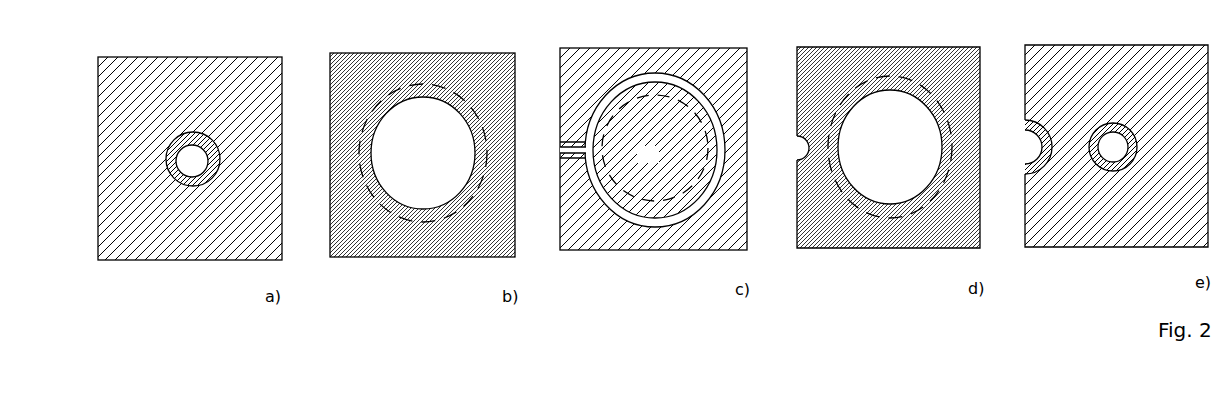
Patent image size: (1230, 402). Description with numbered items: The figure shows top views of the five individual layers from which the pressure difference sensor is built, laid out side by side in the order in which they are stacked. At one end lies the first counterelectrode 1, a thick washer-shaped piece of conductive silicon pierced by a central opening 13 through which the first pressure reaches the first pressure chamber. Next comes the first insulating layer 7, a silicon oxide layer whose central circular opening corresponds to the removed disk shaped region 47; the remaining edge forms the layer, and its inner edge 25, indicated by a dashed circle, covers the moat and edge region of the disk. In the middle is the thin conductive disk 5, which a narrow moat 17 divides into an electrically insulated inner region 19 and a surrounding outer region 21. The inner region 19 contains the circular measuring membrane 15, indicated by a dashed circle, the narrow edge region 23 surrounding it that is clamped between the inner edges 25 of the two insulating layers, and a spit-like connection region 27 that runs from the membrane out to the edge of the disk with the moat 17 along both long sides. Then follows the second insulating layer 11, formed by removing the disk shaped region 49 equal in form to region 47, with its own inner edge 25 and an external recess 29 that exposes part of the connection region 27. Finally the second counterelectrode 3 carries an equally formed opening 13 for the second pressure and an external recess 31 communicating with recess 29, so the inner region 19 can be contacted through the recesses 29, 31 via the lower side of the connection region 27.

The first counterelectrode 1 is at (163, 261).
The second counterelectrode 3 is at (1086, 232).
The disk 5 is at (700, 246).
The first insulating layer 7 is at (366, 250).
The second insulating layer 11 is at (914, 242).
The opening 13 is at (200, 169).
The measuring membrane 15 is at (656, 163).
The moat 17 is at (665, 226).
The inner region 19 is at (632, 100).
The outer region 21 is at (578, 251).
The edge region 23 is at (628, 210).
The inner edges of the insulating layers 25 is at (440, 215).
The connection region 27 is at (555, 156).
The recess 29 is at (791, 151).
The external recess 31 is at (1033, 150).
The disk shaped regions 47 is at (430, 167).
The disk shaped regions 49 is at (895, 167).